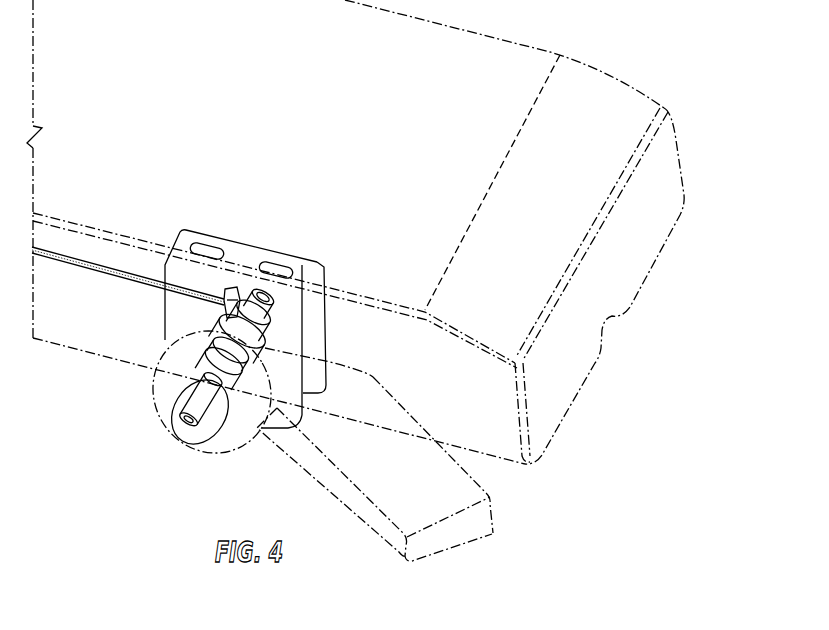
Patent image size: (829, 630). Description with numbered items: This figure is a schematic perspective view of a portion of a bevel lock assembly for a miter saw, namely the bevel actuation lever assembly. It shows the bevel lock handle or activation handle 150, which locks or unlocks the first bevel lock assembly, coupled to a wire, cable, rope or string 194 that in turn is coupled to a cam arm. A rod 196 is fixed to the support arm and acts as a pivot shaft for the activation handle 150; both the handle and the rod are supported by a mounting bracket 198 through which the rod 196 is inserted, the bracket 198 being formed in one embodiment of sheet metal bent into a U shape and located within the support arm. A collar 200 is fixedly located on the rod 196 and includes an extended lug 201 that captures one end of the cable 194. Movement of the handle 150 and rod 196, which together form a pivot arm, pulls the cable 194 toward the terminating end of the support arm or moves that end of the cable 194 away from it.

The activation handle 150 is at (420, 515).
The cable 194 is at (120, 277).
The rod 196 is at (192, 420).
The mounting bracket 198 is at (178, 231).
The collar 200 is at (274, 298).
The extended lug 201 is at (223, 318).